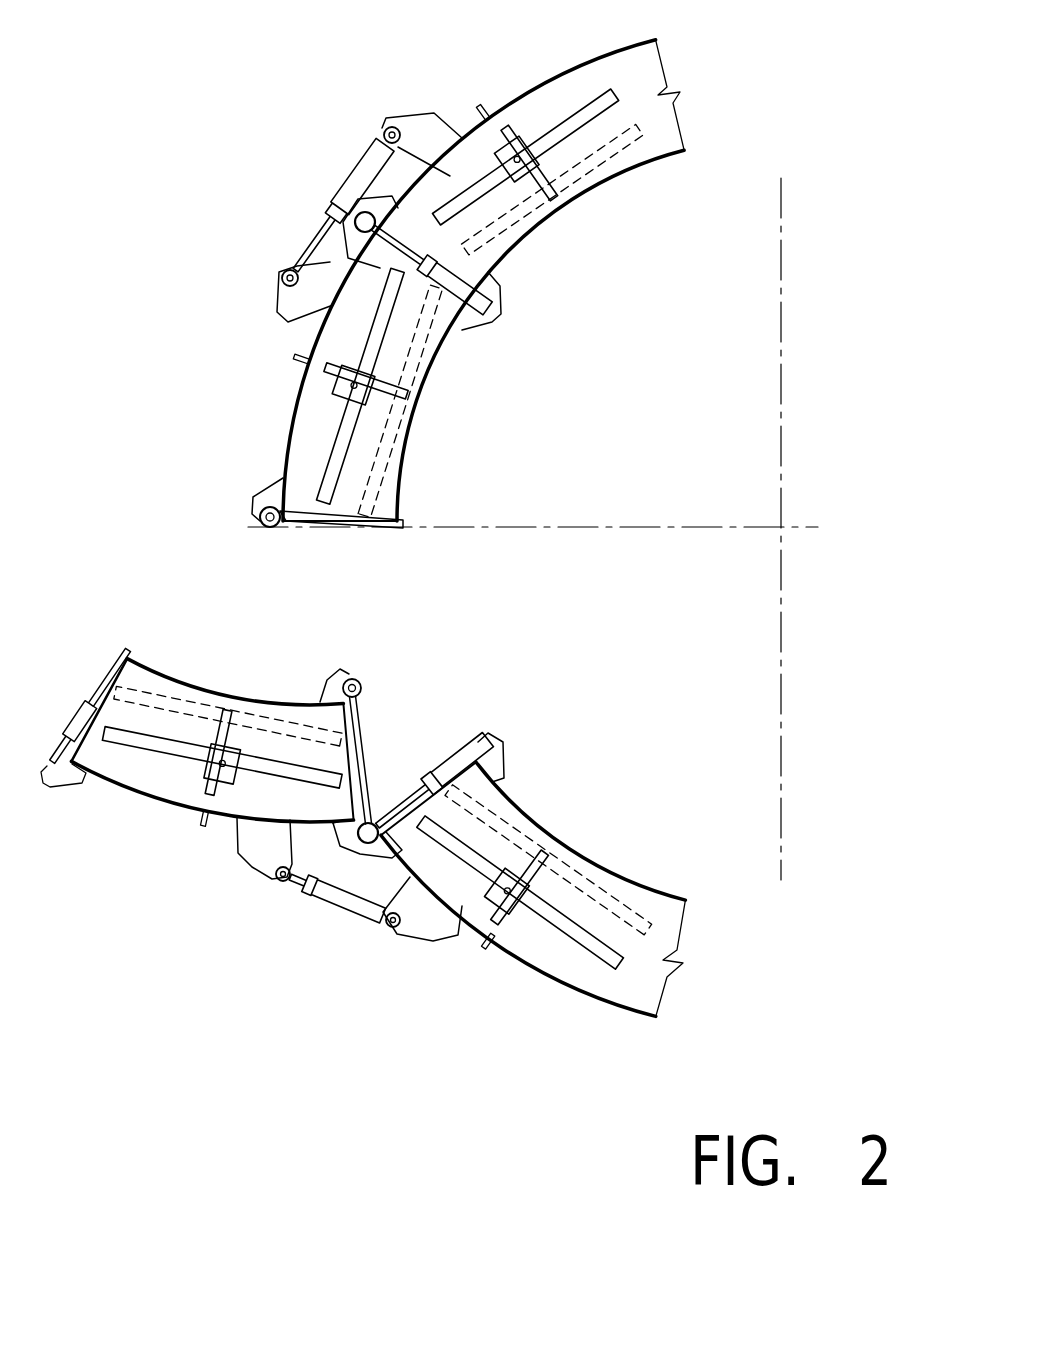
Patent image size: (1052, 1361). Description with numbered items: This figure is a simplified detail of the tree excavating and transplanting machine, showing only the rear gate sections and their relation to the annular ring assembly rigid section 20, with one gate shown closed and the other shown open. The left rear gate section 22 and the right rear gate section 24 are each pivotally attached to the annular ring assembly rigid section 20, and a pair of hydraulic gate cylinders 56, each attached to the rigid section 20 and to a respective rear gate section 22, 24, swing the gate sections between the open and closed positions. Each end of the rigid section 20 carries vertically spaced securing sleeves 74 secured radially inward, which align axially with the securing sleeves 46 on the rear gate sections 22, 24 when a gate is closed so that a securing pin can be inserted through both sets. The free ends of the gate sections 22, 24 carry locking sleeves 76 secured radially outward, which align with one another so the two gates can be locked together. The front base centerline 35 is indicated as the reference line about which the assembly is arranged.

The annular ring assembly rigid section 20 is at (489, 528).
The left rear gate section 22 is at (423, 390).
The right rear gate section 24 is at (198, 693).
The front base centerline 35 is at (633, 528).
The rear gate section securing sleeve 46 is at (355, 678).
The hydraulic gate cylinder 56 is at (348, 182).
The annular ring assembly rigid section securing sleeve 74 is at (487, 735).
The locking sleeve 76 is at (262, 528).